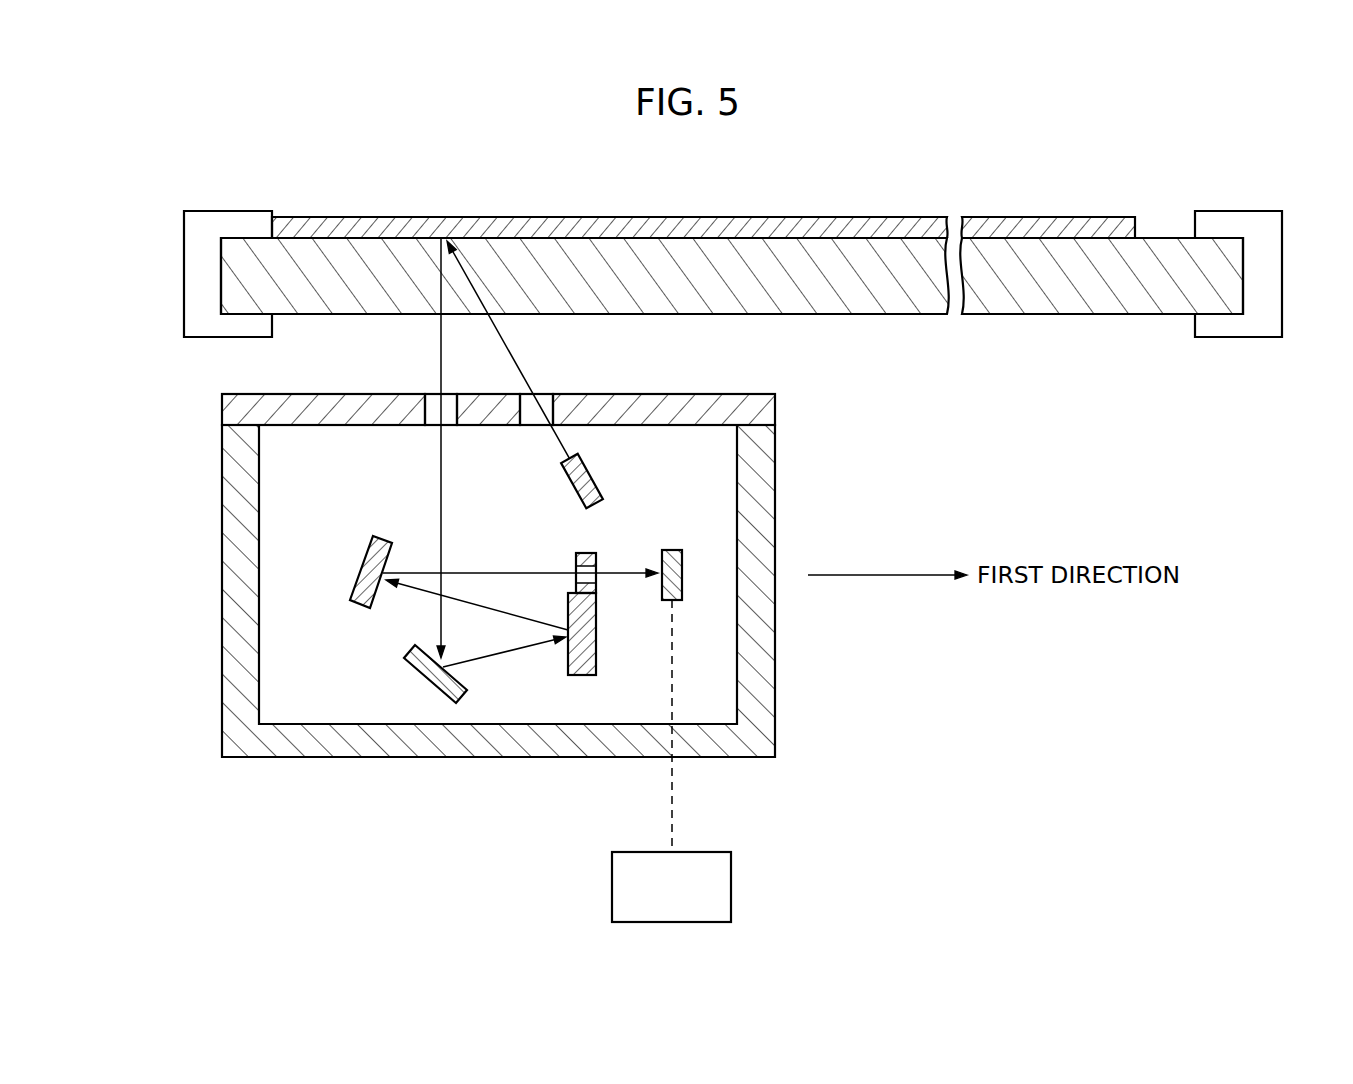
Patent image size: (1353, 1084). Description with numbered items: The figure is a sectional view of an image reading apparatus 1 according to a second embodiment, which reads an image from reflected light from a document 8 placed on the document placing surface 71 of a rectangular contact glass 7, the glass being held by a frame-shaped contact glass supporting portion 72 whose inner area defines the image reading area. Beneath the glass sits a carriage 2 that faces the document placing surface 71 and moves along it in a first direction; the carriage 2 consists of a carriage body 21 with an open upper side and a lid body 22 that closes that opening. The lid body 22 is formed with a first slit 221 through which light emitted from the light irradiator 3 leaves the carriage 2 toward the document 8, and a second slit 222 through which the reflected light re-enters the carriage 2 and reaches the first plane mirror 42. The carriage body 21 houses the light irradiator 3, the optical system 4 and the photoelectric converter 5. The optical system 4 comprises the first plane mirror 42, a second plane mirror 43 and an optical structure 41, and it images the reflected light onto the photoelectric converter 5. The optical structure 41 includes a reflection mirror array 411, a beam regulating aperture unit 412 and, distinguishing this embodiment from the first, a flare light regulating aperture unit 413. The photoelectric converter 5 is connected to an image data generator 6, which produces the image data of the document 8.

The image reading apparatus 1 is at (868, 418).
The carriage 2 is at (444, 543).
The carriage body 21 is at (233, 482).
The lid body 22 is at (465, 378).
The first slit 221 is at (547, 392).
The second slit 222 is at (432, 392).
The light irradiator 3 is at (589, 470).
The optical system 4 is at (488, 603).
The optical structure 41 is at (601, 617).
The reflection mirror array 411 is at (600, 637).
The beam regulating aperture unit 412 is at (622, 537).
The flare light regulating aperture unit 413 is at (580, 553).
The first plane mirror 42 is at (422, 681).
The second plane mirror 43 is at (367, 565).
The photoelectric converter 5 is at (673, 550).
The image data generator 6 is at (718, 888).
The contact glass 7 is at (682, 262).
The document 8 is at (827, 228).
The document placing surface 71 is at (1163, 232).
The contact glass supporting portion 72 is at (214, 218).